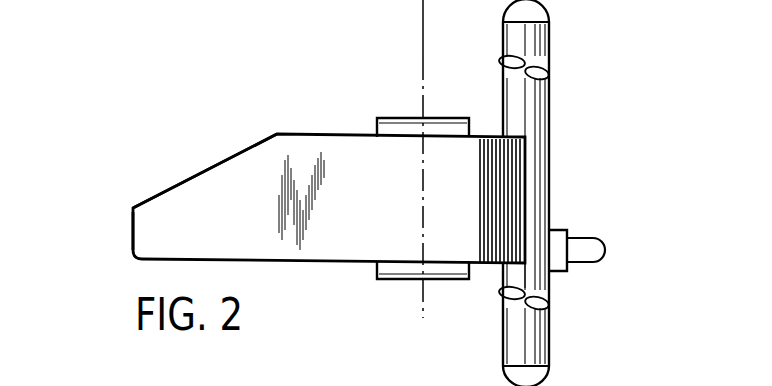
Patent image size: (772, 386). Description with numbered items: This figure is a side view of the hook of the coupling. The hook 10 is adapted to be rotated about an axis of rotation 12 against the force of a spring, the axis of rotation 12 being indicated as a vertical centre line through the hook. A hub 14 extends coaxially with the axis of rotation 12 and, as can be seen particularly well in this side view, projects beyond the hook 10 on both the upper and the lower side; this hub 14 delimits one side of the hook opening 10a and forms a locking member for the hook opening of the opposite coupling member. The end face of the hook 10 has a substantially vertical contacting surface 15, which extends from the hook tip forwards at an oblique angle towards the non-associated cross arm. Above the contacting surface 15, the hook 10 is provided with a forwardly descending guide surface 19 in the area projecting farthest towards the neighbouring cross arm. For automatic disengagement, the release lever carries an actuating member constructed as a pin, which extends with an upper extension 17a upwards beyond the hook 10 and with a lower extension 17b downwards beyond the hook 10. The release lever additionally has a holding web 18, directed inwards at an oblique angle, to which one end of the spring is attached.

The hook 10 is at (340, 223).
The hook opening 10a is at (285, 380).
The axis of rotation 12 is at (423, 42).
The hub 14 is at (377, 127).
The contacting surface 15 is at (124, 247).
The upper extension 17a is at (547, 103).
The lower extension 17b is at (548, 348).
The holding web 18 is at (578, 250).
The guide surface 19 is at (190, 171).